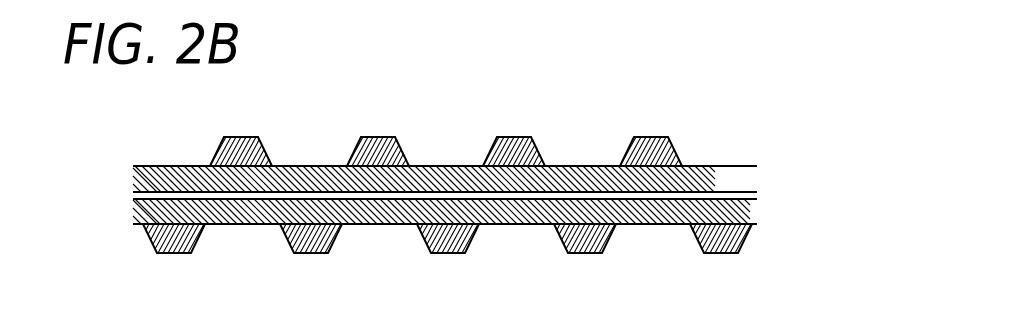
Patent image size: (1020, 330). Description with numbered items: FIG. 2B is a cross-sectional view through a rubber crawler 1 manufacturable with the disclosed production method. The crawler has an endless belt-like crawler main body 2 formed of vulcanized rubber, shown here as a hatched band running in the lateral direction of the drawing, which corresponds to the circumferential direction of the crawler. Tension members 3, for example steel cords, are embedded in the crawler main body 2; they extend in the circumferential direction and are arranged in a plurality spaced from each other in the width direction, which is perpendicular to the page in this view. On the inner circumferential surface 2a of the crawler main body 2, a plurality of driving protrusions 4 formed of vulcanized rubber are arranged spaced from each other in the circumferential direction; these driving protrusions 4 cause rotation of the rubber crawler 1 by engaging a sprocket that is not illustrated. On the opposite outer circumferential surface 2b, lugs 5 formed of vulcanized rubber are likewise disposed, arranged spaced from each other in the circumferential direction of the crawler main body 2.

The rubber crawler 1 is at (437, 122).
The crawler main body 2 is at (700, 171).
The inner circumferential surface 2a is at (310, 166).
The outer circumferential surface 2b is at (243, 224).
The tension members 3 is at (662, 195).
The driving protrusions 4 is at (513, 142).
The lugs 5 is at (583, 238).